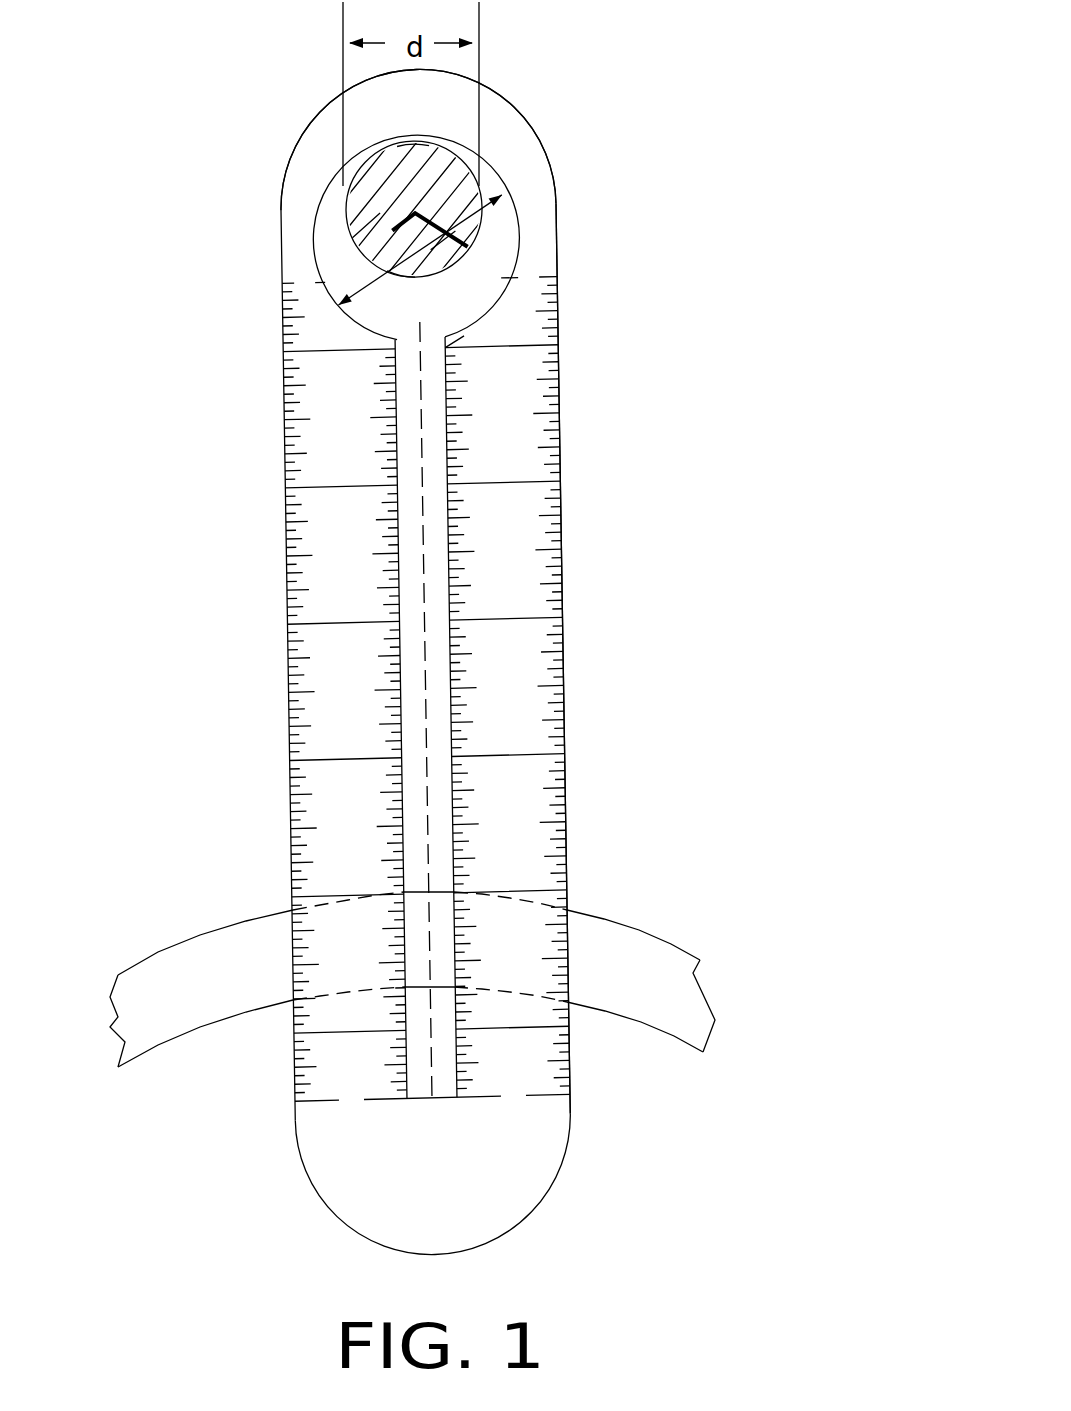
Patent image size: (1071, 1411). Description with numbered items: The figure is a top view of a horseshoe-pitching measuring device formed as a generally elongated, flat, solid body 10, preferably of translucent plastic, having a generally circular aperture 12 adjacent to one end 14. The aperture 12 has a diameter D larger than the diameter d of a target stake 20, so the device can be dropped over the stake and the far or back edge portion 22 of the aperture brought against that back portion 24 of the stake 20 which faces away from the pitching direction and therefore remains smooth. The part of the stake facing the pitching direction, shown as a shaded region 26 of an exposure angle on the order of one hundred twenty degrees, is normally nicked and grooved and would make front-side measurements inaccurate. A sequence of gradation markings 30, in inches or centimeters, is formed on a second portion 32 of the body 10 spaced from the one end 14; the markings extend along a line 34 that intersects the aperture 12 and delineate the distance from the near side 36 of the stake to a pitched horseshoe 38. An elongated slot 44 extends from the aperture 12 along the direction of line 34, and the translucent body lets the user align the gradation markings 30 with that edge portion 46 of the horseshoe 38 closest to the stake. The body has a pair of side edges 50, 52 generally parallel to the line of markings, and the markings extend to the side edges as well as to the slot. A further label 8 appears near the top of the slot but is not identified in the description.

The inner surface of horseshoe section 8 is at (399, 283).
The body 10 is at (563, 450).
The aperture 12 is at (521, 232).
The one end of the body 14 is at (536, 134).
The target stake 20 is at (393, 194).
The far or back edge portion of the aperture 22 is at (446, 147).
The back portion of the stake 24 is at (414, 208).
The shaded region of exposure angle 26 is at (450, 247).
The gradation markings 30 is at (282, 412).
The second portion of the body 32 is at (567, 697).
The line of gradation markings 34 is at (428, 652).
The near side of the stake 36 is at (409, 283).
The pitched horseshoe 38 is at (436, 942).
The elongated slot 44 is at (431, 800).
The edge portion of the horseshoe 46 is at (446, 892).
The side edge 50 is at (357, 692).
The side edge 52 is at (585, 658).